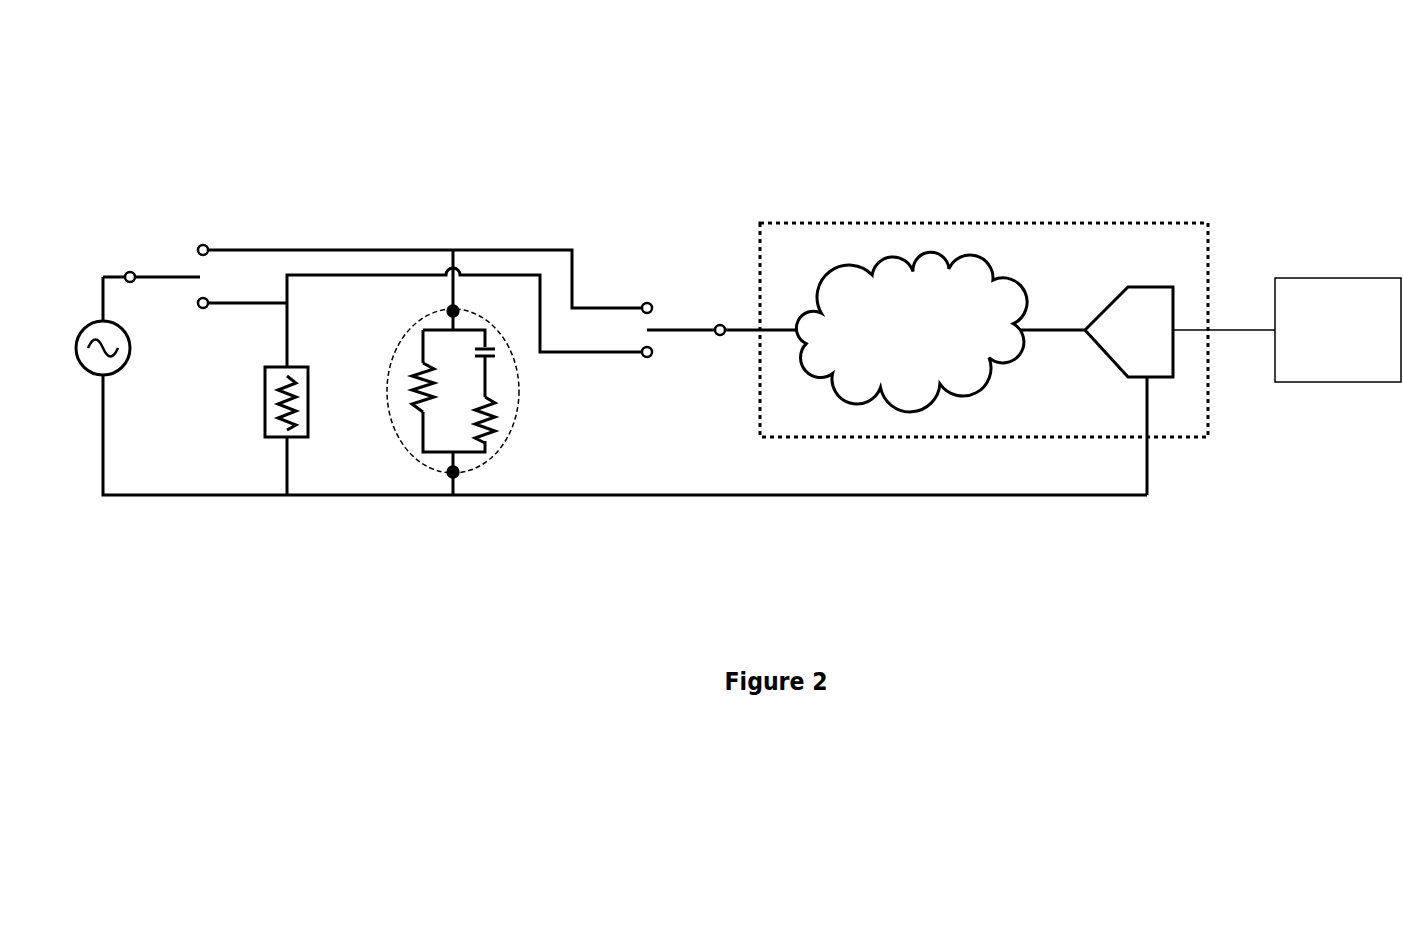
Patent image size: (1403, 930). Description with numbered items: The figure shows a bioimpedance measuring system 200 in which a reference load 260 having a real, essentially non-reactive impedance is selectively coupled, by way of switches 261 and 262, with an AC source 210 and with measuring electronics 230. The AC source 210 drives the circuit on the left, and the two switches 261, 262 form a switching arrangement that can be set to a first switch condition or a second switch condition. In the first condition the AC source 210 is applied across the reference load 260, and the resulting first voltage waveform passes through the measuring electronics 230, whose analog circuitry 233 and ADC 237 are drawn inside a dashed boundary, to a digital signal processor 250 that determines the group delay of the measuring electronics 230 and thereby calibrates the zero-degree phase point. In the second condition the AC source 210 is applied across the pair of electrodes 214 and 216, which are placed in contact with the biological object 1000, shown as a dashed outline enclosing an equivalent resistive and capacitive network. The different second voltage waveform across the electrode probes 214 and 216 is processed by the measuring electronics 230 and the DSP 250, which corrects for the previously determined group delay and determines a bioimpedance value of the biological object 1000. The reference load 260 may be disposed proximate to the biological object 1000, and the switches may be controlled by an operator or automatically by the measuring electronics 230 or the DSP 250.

The bioimpedance measuring system 200 is at (117, 83).
The AC source 210 is at (93, 321).
The switch 261 is at (167, 275).
The reference load 260 is at (265, 391).
The electrode 214 is at (455, 292).
The electrode 216 is at (450, 486).
The biological object 1000 is at (520, 390).
The switch 262 is at (683, 328).
The measuring electronics 230 is at (1057, 222).
The analog circuitry 233 is at (911, 332).
The ADC 237 is at (1129, 332).
The digital signal processor 250 is at (1287, 330).